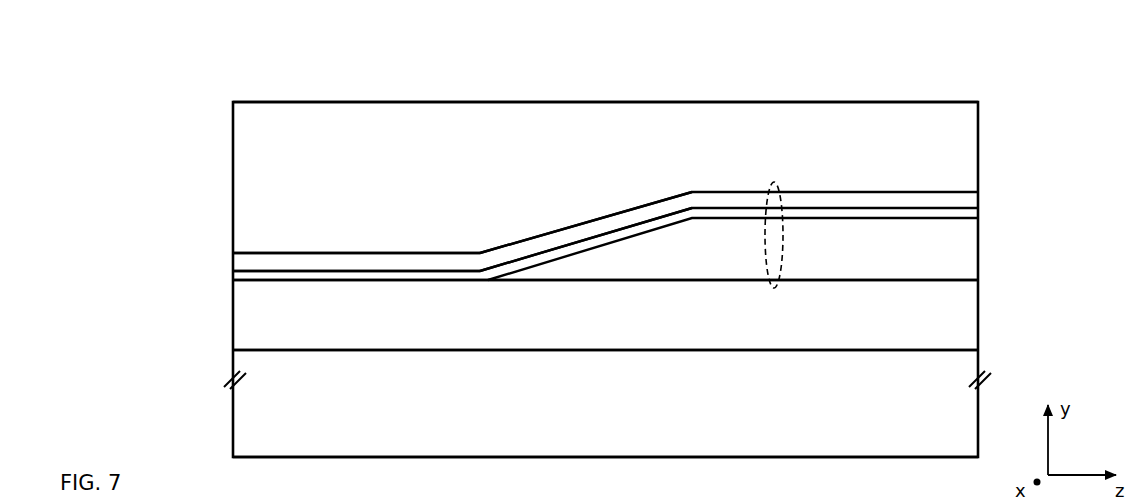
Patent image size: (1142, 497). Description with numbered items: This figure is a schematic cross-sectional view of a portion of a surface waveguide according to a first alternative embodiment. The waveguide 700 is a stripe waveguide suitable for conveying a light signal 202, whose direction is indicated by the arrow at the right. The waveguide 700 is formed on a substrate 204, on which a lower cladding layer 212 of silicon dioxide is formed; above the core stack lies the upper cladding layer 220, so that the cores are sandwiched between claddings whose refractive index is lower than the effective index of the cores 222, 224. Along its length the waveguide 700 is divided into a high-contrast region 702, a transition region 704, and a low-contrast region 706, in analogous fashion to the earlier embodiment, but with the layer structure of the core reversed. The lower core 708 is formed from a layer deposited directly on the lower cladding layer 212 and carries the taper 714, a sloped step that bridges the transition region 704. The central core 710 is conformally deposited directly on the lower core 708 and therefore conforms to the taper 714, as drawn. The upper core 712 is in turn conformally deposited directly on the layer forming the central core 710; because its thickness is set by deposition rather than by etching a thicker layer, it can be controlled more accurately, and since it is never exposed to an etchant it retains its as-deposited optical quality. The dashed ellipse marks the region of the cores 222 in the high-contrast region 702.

The waveguide 700 is at (143, 111).
The high-contrast region 702 is at (978, 85).
The transition region 704 is at (693, 85).
The low-contrast region 706 is at (482, 85).
The lower core 708 is at (605, 261).
The central core 710 is at (233, 275).
The upper core 712 is at (597, 228).
The taper 714 is at (652, 244).
The upper cladding layer 220 is at (605, 128).
The core 222 is at (772, 183).
The core 224 is at (410, 262).
The lower cladding layer 212 is at (605, 315).
The substrate 204 is at (607, 403).
The light signal 202 is at (990, 227).